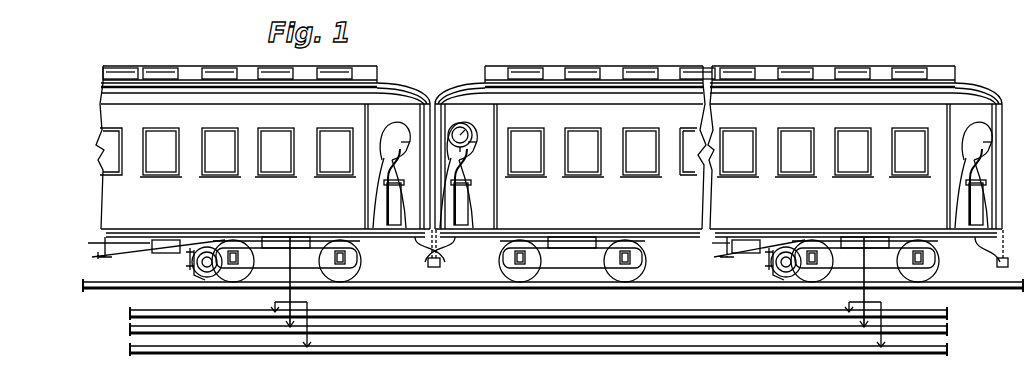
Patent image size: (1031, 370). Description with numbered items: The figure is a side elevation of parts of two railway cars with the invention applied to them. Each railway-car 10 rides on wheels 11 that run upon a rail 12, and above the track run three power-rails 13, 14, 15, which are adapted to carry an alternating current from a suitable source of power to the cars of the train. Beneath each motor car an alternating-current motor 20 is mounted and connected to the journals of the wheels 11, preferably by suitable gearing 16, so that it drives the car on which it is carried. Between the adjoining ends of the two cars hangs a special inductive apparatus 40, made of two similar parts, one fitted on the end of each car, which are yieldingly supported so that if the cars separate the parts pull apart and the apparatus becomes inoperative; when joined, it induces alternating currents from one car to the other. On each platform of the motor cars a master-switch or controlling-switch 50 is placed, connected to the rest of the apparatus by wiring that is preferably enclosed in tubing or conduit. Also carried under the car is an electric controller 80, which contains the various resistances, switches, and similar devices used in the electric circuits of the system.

The railway-car 10 is at (395, 98).
The wheels 11 is at (258, 266).
The rail 12 is at (447, 284).
The power-rail 13 is at (950, 313).
The power-rail 14 is at (950, 330).
The power-rail 15 is at (950, 352).
The gearing 16 is at (204, 276).
The alternating-current motor 20 is at (186, 268).
The inductive apparatus 40 is at (428, 266).
The master-switch 50 is at (1008, 191).
The electric controller 80 is at (160, 253).